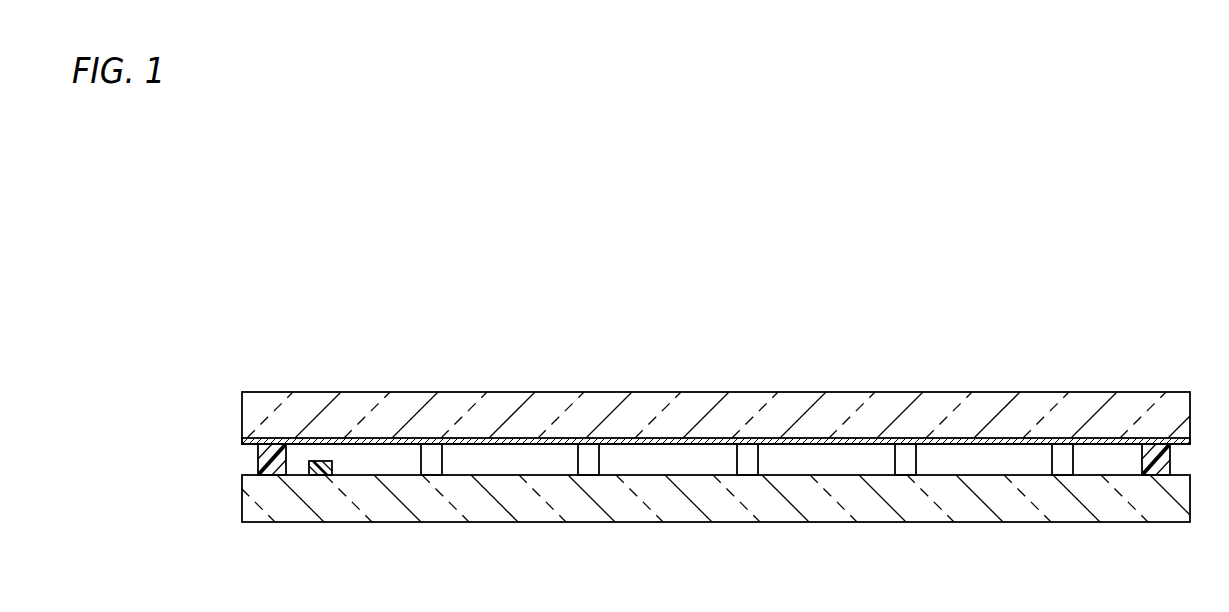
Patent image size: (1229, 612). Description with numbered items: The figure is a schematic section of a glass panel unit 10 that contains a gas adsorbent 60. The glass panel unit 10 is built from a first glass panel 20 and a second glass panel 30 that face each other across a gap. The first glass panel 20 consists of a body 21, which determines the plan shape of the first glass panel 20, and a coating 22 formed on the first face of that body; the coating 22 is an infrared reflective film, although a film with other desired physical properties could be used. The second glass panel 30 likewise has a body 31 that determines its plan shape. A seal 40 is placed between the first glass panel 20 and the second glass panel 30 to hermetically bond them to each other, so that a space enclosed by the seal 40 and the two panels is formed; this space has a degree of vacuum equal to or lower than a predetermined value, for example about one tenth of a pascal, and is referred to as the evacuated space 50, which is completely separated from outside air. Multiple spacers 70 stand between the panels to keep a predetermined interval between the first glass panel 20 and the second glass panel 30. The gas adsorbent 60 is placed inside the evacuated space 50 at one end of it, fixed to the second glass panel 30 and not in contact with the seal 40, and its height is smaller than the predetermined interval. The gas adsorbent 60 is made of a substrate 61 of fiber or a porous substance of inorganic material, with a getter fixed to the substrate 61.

The glass panel unit 10 is at (331, 369).
The first glass panel 20 is at (1178, 397).
The body 21 is at (1080, 408).
The coating 22 is at (1117, 440).
The second glass panel 30 is at (1167, 510).
The body 31 is at (1110, 500).
The seal 40 is at (259, 465).
The evacuated space 50 is at (807, 455).
The gas adsorbent 60 is at (313, 474).
The substrate 61 is at (328, 476).
The spacers 70 is at (432, 468).